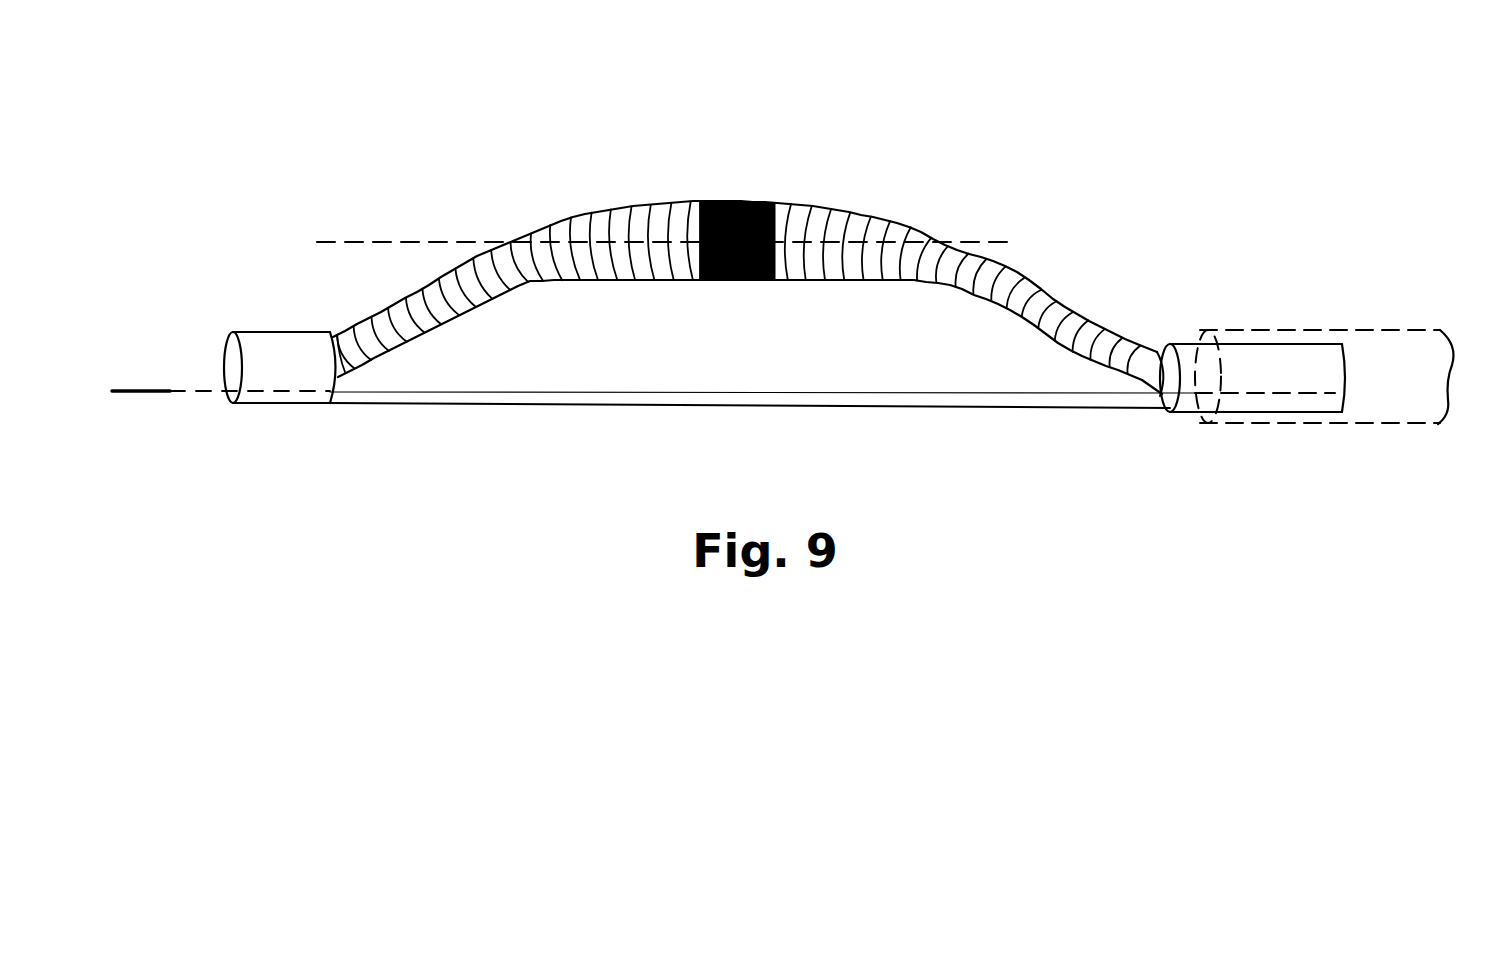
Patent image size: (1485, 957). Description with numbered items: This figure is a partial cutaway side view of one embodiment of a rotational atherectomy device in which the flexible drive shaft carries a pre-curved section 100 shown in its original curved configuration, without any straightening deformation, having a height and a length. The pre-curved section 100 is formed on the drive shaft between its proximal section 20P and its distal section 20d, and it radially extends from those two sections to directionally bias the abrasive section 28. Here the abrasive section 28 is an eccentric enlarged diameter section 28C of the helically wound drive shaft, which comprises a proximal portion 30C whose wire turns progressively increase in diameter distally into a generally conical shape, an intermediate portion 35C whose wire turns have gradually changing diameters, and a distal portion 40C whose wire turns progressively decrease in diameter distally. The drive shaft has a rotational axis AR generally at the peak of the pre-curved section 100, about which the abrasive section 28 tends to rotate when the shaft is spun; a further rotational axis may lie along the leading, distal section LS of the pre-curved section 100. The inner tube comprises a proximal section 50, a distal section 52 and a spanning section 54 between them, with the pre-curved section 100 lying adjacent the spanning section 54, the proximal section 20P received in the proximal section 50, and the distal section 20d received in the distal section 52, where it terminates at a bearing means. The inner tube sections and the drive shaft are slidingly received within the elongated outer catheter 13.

The pre-curved section 100 is at (1123, 103).
The abrasive section 28 is at (918, 172).
The eccentric enlarged diameter section 28C is at (947, 223).
The proximal portion 30C is at (640, 205).
The intermediate portion 35C is at (740, 202).
The distal portion 40C is at (812, 208).
The axis of rotation AR is at (317, 242).
The leading section of pre-curved section LS is at (470, 254).
The inner tube distal section 52 is at (253, 331).
The spanning section 54 is at (522, 405).
The inner tube proximal section 50 is at (1233, 353).
The elongated outer catheter 13 is at (1387, 347).
The distal section of drive shaft 20d is at (337, 363).
The proximal section of drive shaft 20P is at (1152, 380).